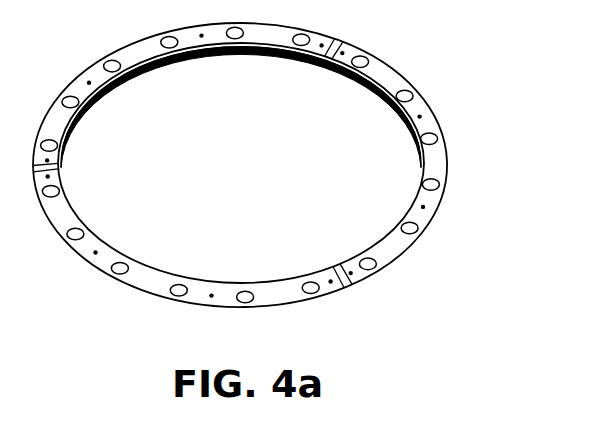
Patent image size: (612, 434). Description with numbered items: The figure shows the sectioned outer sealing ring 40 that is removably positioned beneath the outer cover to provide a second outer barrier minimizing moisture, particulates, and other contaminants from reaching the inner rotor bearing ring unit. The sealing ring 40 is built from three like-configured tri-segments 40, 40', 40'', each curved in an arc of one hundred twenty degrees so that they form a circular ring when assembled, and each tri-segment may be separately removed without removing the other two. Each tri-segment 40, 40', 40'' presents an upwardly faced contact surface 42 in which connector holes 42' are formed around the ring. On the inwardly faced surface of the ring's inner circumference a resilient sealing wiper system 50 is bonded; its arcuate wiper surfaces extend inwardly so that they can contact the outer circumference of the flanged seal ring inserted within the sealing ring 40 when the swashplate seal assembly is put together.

The outer sealing ring 40 is at (186, 91).
The tri-segment 40' is at (417, 152).
The tri-segment 40'' is at (215, 248).
The contact surface 42 is at (276, 165).
The connector holes 42' is at (240, 165).
The sealing wiper system 50 is at (146, 75).